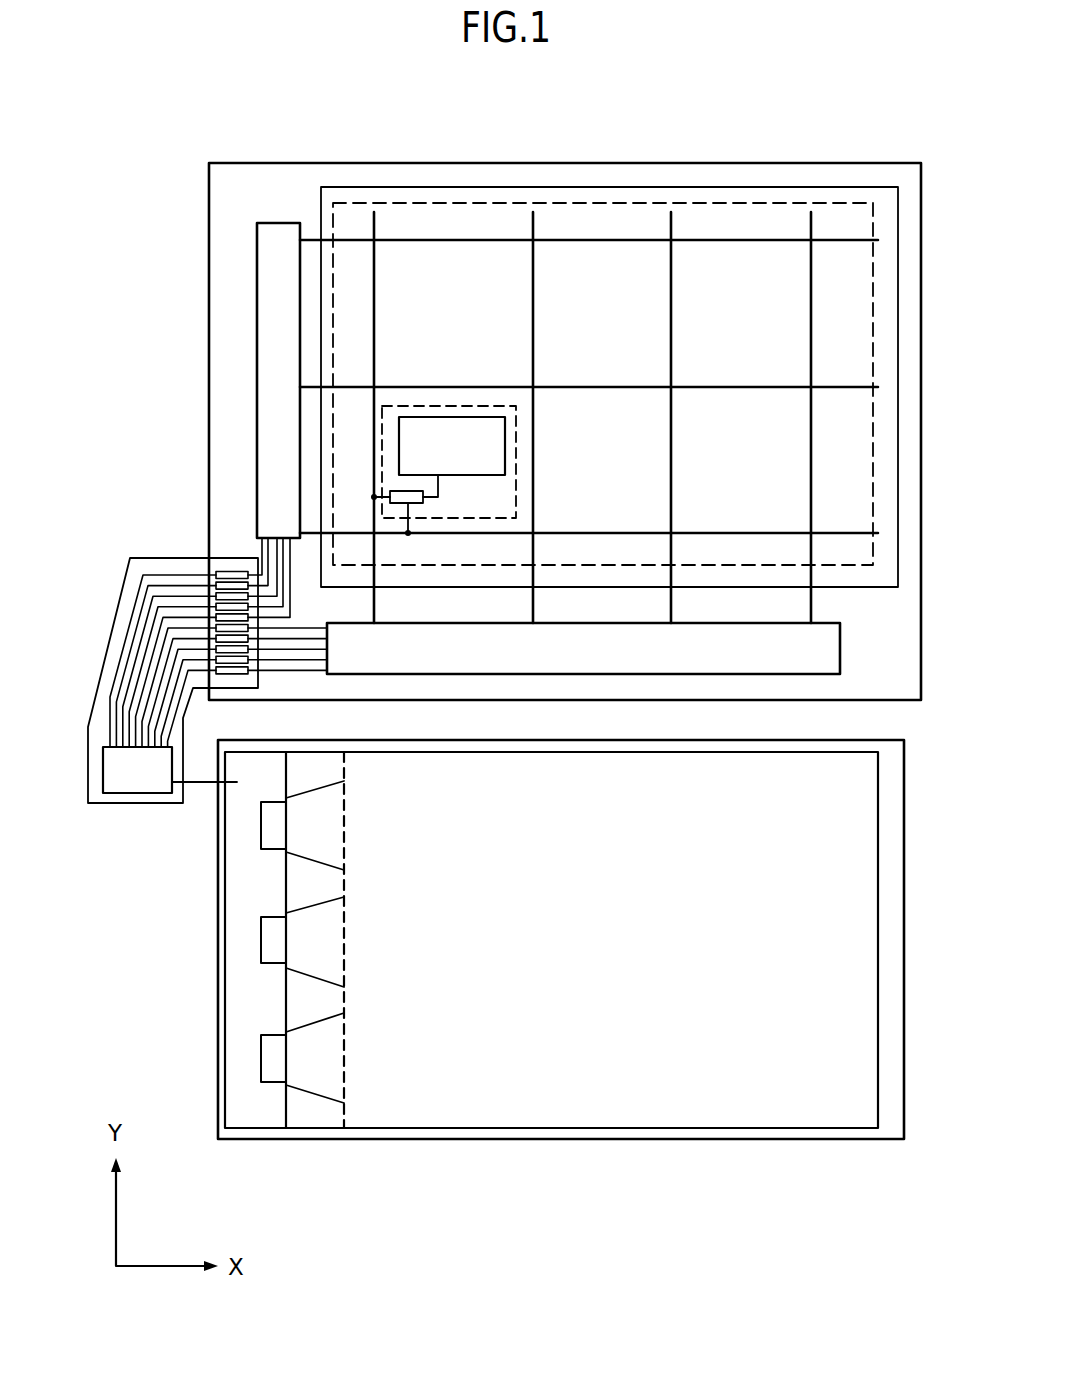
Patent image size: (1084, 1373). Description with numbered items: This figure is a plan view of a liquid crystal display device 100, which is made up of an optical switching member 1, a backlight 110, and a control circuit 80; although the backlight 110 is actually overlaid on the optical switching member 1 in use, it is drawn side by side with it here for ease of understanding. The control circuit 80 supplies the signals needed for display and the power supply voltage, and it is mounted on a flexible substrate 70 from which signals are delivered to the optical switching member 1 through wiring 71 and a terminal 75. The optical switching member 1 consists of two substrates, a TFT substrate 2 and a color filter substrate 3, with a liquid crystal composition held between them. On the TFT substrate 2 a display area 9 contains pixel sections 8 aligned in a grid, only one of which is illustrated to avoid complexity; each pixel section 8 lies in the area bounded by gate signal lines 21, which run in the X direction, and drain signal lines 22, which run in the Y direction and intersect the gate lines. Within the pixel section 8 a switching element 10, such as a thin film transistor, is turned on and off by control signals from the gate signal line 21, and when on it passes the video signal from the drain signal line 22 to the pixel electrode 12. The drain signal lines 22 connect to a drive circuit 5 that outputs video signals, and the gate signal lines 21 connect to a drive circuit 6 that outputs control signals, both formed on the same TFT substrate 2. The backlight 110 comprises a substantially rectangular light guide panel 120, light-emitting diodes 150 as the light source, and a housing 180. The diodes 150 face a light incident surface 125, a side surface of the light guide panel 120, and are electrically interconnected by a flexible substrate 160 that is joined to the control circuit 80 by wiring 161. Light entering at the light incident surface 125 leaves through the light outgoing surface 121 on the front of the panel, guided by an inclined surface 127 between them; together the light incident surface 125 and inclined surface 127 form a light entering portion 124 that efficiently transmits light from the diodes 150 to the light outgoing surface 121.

The optical switching member 1 is at (586, 163).
The TFT substrate 2 is at (333, 168).
The color filter substrate 3 is at (416, 187).
The drive circuit 5 is at (808, 675).
The drive circuit 6 is at (272, 223).
The pixel section 8 is at (516, 432).
The display area 9 is at (722, 213).
The switching element 10 is at (424, 497).
The pixel electrode 12 is at (462, 447).
The gate signal line 21 is at (587, 386).
The drain signal line 22 is at (374, 330).
The flexible substrate 70 is at (163, 560).
The wiring 71 is at (142, 557).
The terminal 75 is at (232, 572).
The control circuit 80 is at (127, 783).
The liquid crystal display device 100 is at (563, 1178).
The backlight 110 is at (655, 1143).
The light guide panel 120 is at (812, 1130).
The light outgoing surface 121 is at (720, 1040).
The light entering portion 124 is at (297, 1112).
The light incident surface 125 is at (283, 935).
The inclined surface 127 is at (330, 1068).
The light-emitting diode 150 is at (260, 1058).
The flexible substrate 160 is at (235, 997).
The wiring 161 is at (203, 795).
The housing 180 is at (453, 1137).